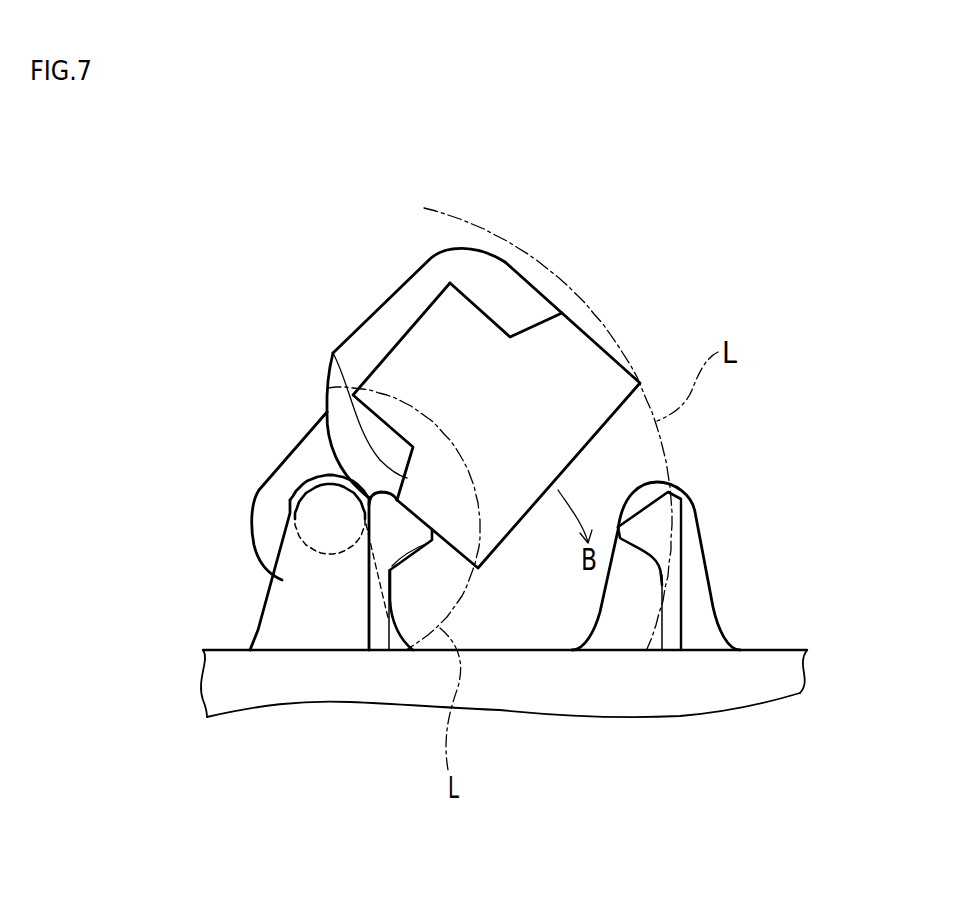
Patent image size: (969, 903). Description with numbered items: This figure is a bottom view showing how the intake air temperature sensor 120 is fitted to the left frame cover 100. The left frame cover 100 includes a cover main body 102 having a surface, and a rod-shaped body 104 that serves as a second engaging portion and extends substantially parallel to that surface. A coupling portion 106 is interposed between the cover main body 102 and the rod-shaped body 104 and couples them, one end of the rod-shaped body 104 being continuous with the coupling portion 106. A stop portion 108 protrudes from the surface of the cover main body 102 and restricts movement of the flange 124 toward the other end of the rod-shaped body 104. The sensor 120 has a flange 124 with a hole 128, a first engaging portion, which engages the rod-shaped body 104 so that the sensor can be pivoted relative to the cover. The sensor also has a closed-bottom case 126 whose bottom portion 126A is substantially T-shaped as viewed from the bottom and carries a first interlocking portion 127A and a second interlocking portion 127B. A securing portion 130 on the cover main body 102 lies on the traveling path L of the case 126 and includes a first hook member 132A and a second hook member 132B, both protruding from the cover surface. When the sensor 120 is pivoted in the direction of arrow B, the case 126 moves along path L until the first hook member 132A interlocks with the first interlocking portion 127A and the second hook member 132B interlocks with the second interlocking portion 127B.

The left frame cover 100 is at (504, 746).
The cover main body 102 is at (225, 690).
The rod-shaped body 104 is at (328, 483).
The coupling portion 106 is at (479, 642).
The stop portion 108 is at (692, 513).
The intake air temperature sensor 120 is at (405, 391).
The flange 124 is at (282, 480).
The case 126 is at (434, 410).
The bottom portion 126A is at (402, 338).
The first interlocking portion 127A is at (333, 352).
The second interlocking portion 127B is at (535, 327).
The hole 128 is at (287, 517).
The securing portion 130 is at (534, 646).
The first hook member 132A is at (383, 612).
The second hook member 132B is at (673, 622).